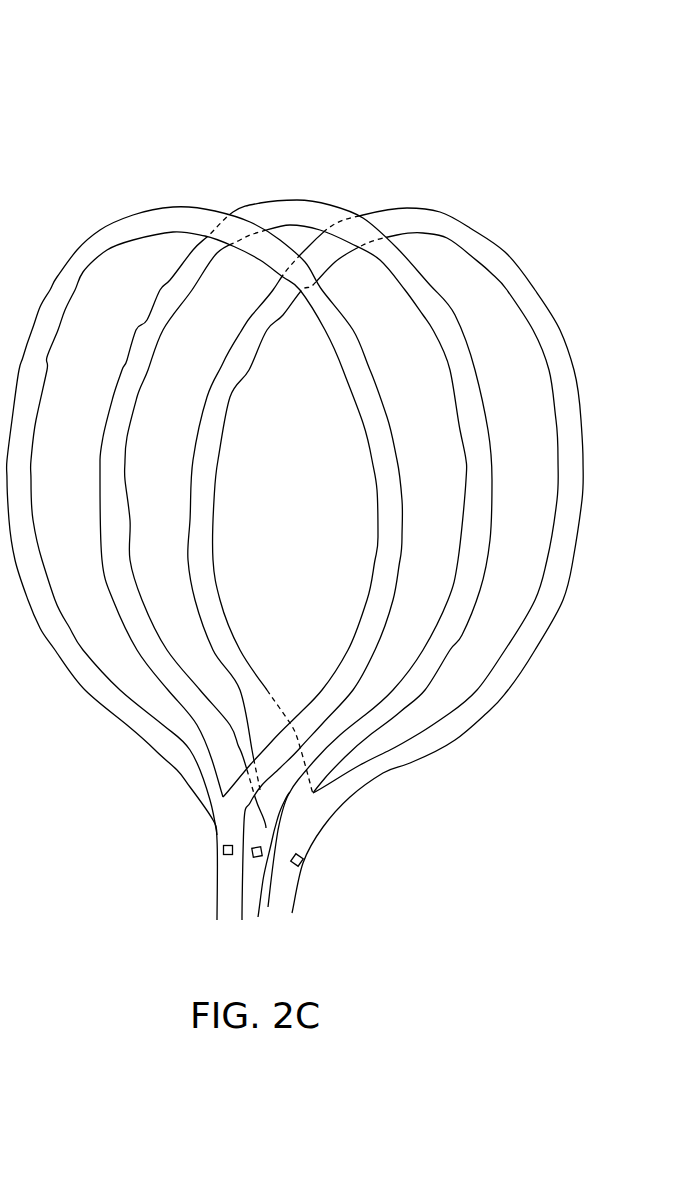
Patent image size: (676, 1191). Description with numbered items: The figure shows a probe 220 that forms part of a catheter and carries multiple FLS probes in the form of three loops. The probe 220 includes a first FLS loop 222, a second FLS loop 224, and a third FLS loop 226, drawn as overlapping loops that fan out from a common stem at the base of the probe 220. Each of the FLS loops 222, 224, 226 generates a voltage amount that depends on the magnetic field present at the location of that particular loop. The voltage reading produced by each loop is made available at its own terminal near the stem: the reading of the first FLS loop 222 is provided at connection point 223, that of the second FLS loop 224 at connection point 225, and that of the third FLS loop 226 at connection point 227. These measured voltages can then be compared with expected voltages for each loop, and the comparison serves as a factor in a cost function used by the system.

The probe 220 is at (126, 59).
The FLS loop 222 is at (140, 228).
The FLS loop 224 is at (297, 200).
The FLS loop 226 is at (452, 228).
The connection point 223 is at (222, 848).
The connection point 225 is at (253, 858).
The connection point 227 is at (298, 866).